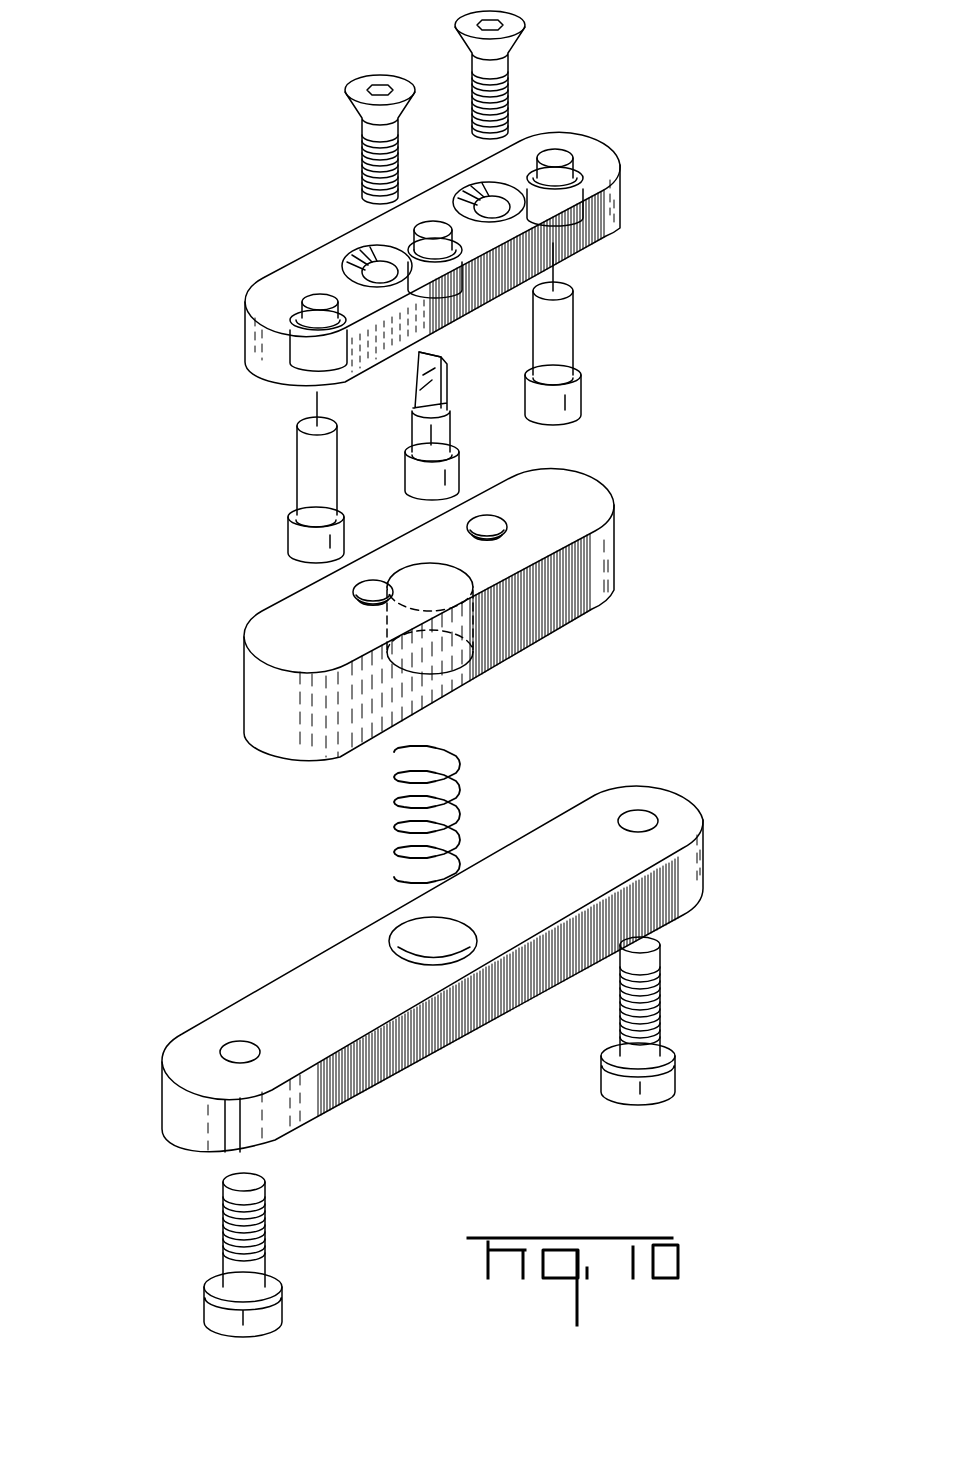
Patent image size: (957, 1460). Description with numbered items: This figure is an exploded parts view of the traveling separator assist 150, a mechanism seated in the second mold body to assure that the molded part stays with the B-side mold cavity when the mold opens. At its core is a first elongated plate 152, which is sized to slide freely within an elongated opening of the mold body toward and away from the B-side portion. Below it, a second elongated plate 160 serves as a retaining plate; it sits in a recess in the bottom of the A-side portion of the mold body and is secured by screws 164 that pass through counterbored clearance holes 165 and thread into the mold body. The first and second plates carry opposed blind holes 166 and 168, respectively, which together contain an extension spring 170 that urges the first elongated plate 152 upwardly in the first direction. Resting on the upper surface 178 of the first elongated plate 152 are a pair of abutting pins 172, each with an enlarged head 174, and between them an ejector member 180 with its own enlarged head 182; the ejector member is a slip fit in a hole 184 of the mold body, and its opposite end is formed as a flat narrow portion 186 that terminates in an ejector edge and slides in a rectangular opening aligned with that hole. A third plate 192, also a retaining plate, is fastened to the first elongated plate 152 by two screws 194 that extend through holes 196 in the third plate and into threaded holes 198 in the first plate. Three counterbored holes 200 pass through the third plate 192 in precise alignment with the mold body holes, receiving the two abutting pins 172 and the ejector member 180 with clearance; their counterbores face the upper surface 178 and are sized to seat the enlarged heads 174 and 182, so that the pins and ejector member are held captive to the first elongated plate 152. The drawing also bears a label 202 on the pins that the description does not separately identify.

The traveling separator assist 150 is at (187, 820).
The first elongated plate 152 is at (404, 620).
The second elongated plate 160 is at (402, 932).
The screws 164 is at (676, 1085).
The counterbored clearance holes 165 is at (636, 812).
The blind hole 166 is at (466, 629).
The blind hole 168 is at (416, 932).
The extension spring 170 is at (463, 802).
The abutting pins 172 is at (440, 371).
The enlarged heads 174 is at (570, 397).
The upper surface 178 is at (280, 623).
The ejector member 180 is at (467, 398).
The enlarged head 182 is at (405, 463).
The hole 184 is at (464, 378).
The flat narrow portion 186 is at (430, 355).
The third plate 192 is at (583, 127).
The screws 194 is at (457, 33).
The holes 196 is at (497, 203).
The threaded holes 198 is at (486, 523).
The counterbored holes 200 is at (560, 157).
The pin end 202 is at (566, 287).